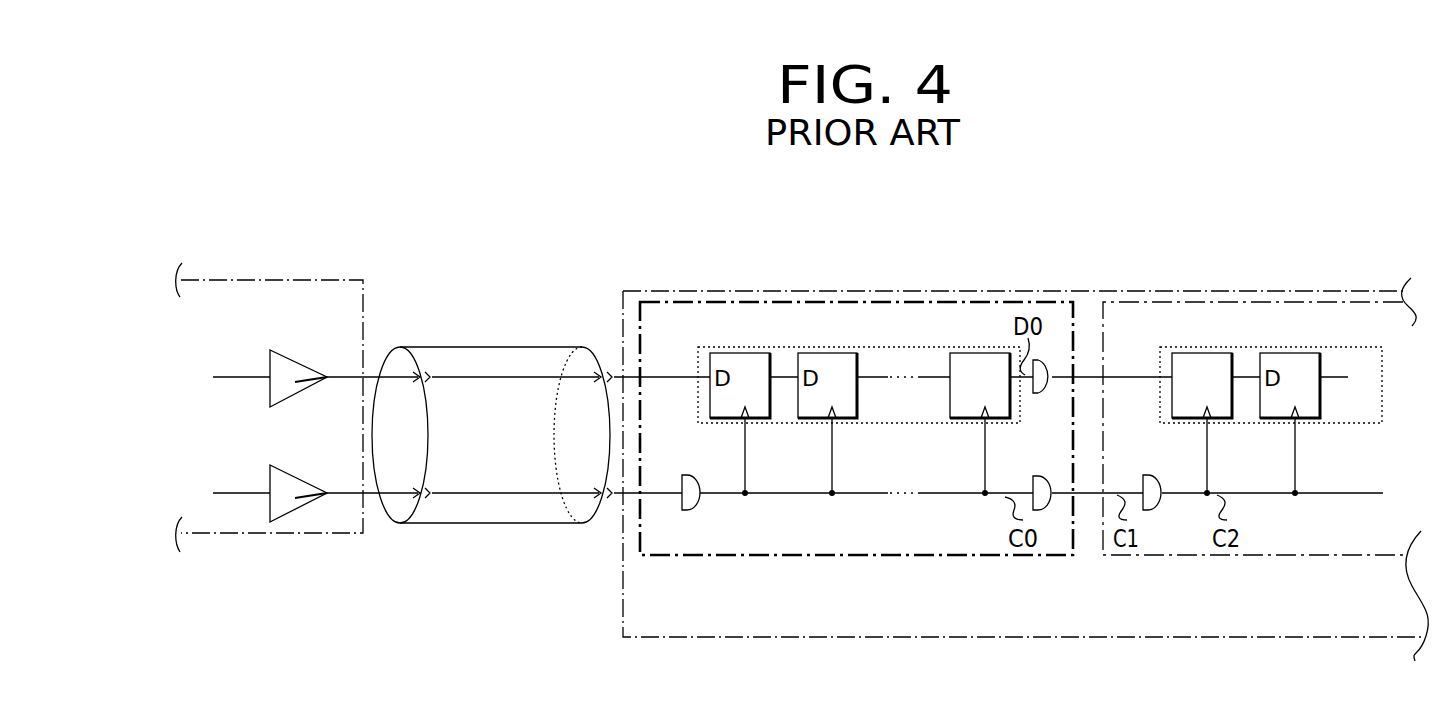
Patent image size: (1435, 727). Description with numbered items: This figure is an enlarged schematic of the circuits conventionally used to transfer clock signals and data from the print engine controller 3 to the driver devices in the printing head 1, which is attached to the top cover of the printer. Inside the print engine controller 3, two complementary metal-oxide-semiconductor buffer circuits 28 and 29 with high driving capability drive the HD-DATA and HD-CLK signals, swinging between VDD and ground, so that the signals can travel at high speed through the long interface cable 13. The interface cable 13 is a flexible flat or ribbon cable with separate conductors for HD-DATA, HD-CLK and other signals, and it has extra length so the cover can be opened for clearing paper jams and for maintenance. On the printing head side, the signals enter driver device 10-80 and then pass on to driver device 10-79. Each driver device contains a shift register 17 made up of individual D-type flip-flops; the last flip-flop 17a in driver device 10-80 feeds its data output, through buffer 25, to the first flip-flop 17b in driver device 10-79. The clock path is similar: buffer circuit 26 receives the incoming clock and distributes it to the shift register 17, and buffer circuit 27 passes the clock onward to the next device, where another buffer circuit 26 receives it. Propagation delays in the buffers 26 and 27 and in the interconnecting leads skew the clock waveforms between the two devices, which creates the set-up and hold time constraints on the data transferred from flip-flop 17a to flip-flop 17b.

The printing head 1 is at (617, 583).
The print engine controller 3 is at (270, 276).
The interface cable 13 is at (502, 347).
The shift register 17 is at (700, 403).
The last flip-flop 17a is at (973, 357).
The first flip-flop 17b is at (1210, 357).
The buffer 25 is at (1040, 394).
The buffer circuit 26 is at (692, 511).
The buffer circuit 27 is at (1033, 473).
The CMOS buffer circuit 28 is at (299, 367).
The CMOS buffer circuit 29 is at (299, 482).
The driver device 10-80 is at (915, 302).
The driver device 10-79 is at (1268, 302).